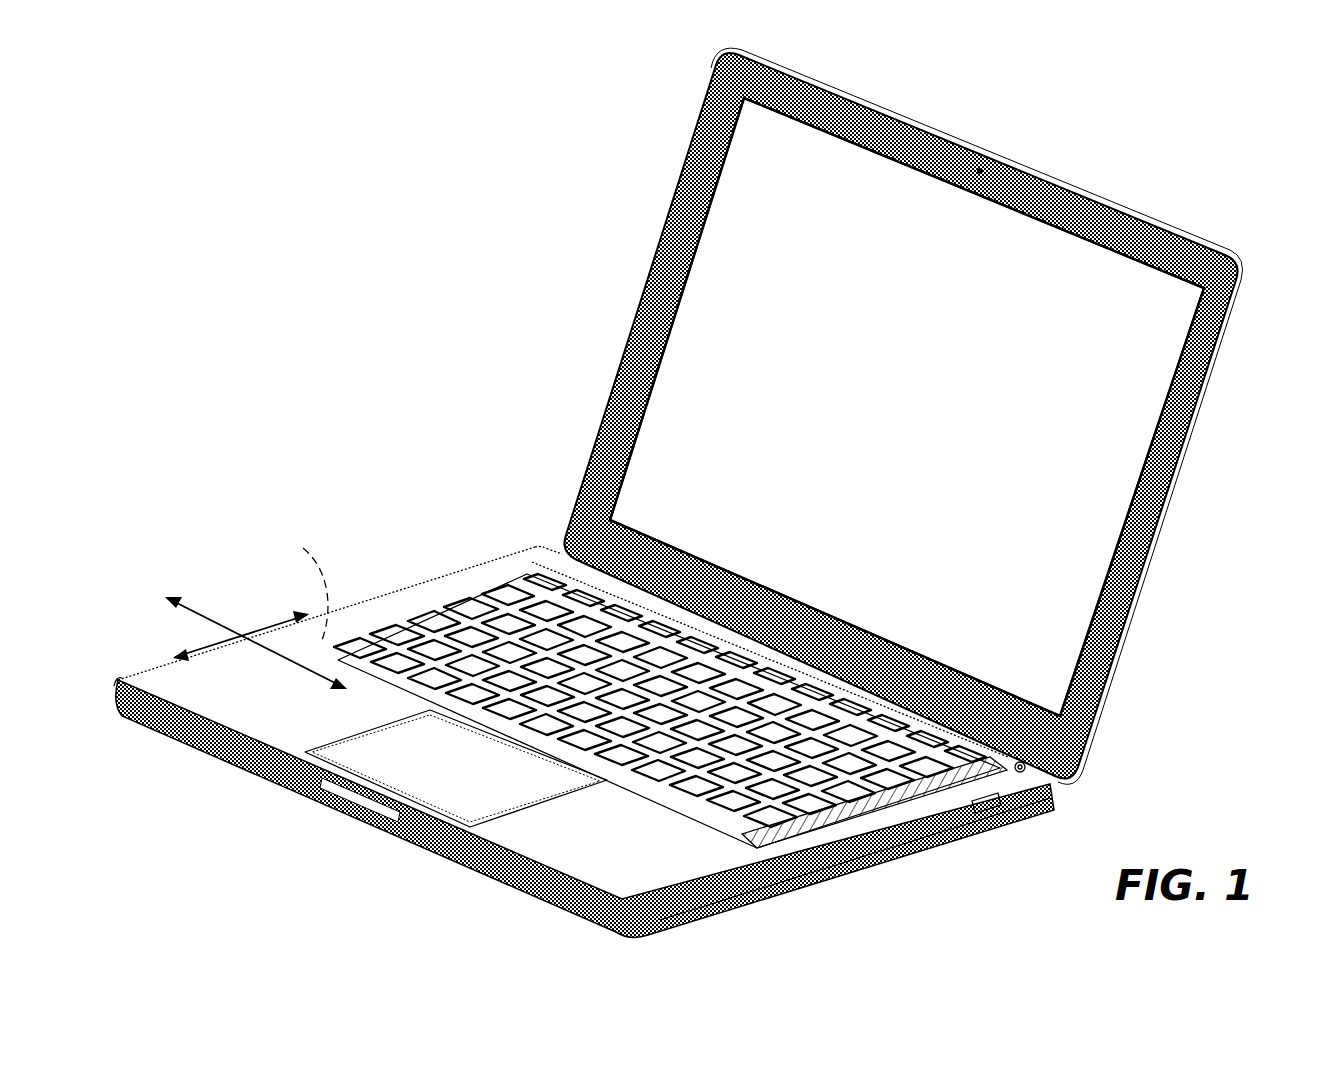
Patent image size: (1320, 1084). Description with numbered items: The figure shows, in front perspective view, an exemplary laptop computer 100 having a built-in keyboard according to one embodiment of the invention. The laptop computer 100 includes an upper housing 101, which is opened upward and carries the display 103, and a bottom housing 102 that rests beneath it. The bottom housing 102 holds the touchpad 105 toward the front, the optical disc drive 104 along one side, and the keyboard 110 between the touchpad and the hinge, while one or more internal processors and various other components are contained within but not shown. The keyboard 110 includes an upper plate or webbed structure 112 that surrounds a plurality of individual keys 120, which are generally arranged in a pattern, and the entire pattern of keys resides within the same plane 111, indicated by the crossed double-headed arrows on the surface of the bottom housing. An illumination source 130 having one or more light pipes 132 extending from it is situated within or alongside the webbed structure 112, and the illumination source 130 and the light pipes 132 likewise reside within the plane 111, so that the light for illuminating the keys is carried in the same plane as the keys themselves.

The laptop computer 100 is at (488, 198).
The upper housing 101 is at (903, 416).
The bottom housing 102 is at (748, 912).
The display 103 is at (925, 415).
The optical disc drive 104 is at (890, 852).
The touchpad 105 is at (461, 776).
The keyboard 110 is at (578, 574).
The plane 111 is at (256, 643).
The upper plate or webbed structure 112 is at (493, 587).
The individual keys 120 is at (417, 632).
The illumination source 130 is at (982, 803).
The light pipes 132 is at (304, 579).